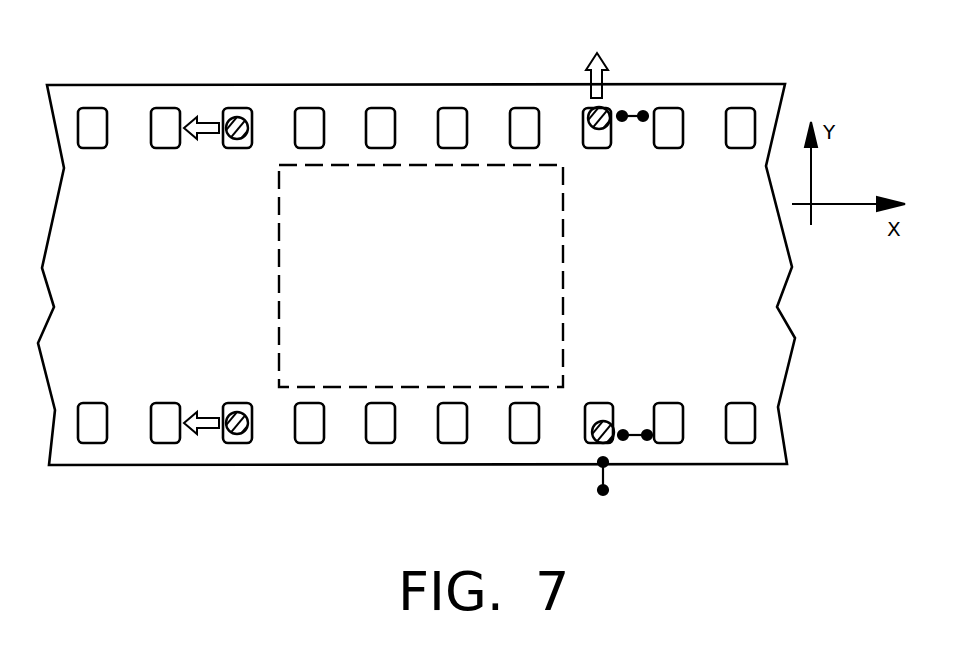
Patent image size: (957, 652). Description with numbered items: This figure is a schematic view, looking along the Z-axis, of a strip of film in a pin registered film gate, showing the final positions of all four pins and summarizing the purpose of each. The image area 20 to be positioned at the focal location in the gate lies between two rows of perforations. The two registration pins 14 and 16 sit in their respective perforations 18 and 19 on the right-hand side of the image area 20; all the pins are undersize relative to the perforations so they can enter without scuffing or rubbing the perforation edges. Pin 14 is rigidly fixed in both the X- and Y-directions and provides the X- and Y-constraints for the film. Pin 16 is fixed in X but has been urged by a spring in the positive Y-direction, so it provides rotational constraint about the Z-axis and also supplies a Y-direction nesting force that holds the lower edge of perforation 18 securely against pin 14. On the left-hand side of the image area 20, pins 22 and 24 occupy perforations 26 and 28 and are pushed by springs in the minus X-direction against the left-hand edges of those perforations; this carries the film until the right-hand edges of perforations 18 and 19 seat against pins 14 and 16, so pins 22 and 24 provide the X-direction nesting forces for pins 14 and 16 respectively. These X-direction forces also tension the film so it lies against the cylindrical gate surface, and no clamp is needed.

The registration pin 14 is at (612, 442).
The registration pin 16 is at (606, 106).
The perforation 18 is at (578, 433).
The perforation 19 is at (575, 122).
The image area 20 is at (439, 283).
The pin 22 is at (250, 424).
The pin 24 is at (247, 128).
The perforation 26 is at (213, 453).
The perforation 28 is at (211, 104).